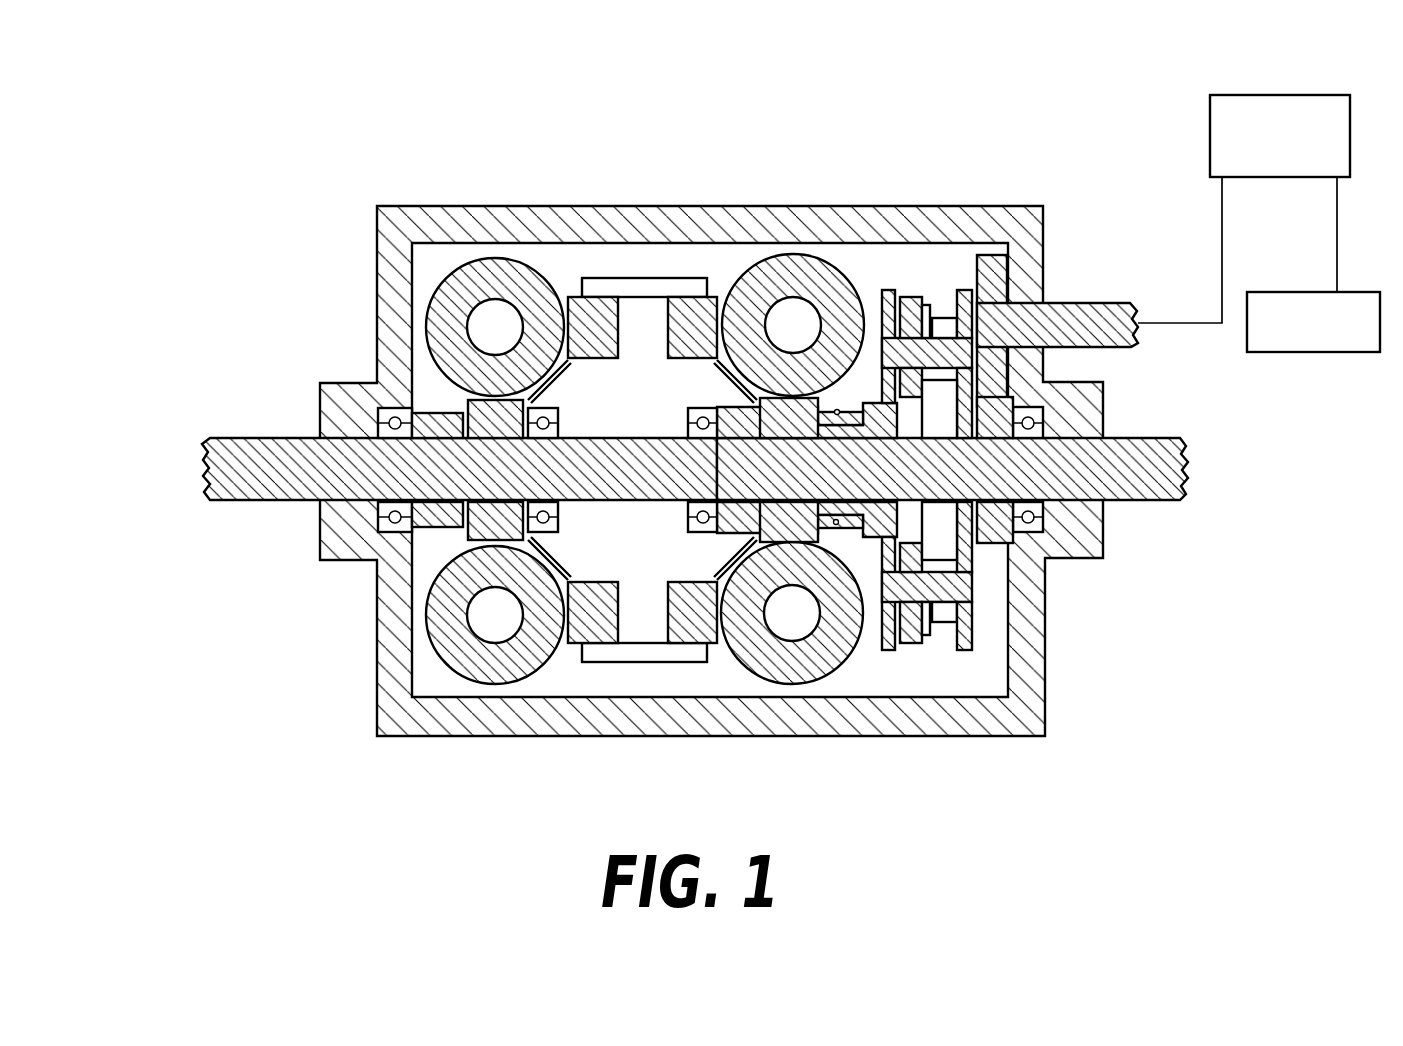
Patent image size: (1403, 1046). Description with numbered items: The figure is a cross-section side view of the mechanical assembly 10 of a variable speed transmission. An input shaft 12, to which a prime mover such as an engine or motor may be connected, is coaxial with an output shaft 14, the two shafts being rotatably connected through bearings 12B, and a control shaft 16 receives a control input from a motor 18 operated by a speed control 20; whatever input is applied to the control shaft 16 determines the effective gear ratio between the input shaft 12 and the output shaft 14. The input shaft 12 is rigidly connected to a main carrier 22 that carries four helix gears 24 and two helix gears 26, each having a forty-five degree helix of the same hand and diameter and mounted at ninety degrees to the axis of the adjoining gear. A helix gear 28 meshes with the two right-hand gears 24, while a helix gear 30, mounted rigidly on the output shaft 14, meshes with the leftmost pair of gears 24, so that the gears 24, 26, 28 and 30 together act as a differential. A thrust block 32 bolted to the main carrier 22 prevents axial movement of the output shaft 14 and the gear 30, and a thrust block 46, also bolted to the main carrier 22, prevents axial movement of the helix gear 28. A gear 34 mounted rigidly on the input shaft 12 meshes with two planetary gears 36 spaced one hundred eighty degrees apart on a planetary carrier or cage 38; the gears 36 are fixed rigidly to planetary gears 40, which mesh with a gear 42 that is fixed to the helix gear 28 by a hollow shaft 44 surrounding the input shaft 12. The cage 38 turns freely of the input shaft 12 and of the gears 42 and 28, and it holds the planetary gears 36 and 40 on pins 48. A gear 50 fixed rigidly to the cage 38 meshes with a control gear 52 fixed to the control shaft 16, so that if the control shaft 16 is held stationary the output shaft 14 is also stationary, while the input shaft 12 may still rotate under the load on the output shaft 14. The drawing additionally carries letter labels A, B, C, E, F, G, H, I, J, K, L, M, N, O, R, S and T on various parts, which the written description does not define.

The mechanical assembly 10 is at (572, 812).
The input shaft 12 is at (1190, 465).
The bearings 12B is at (706, 531).
The output shaft 14 is at (222, 460).
The control shaft 16 is at (1095, 310).
The motor 18 is at (1272, 178).
The speed control 20 is at (1327, 352).
The main carrier 22 is at (638, 285).
The helix gears 24 is at (621, 453).
The helix gears 26 is at (592, 298).
The helix gear 28 is at (800, 545).
The helix gear 30 is at (507, 540).
The thrust block 32 is at (432, 517).
The gear 34 is at (1034, 500).
The planetary gears 36 is at (935, 305).
The planetary carrier 38 is at (873, 290).
The planetary gears 40 is at (905, 296).
The gear 42 is at (910, 512).
The hollow shaft 44 is at (807, 469).
The thrust block 46 is at (750, 368).
The pins 48 is at (995, 300).
The gear 50 is at (1003, 456).
The control gear 52 is at (975, 300).
The output shaft portion A is at (948, 468).
The input shaft portion B is at (589, 468).
The cavity C is at (590, 476).
The support block E is at (643, 471).
The input disc F is at (497, 471).
The output disc G is at (785, 471).
The hub block H is at (938, 469).
The spacer I is at (930, 306).
The friction plate J is at (912, 670).
The hub K is at (868, 462).
The clutch plate L is at (966, 652).
The bearing block M is at (995, 470).
The housing wall N is at (1008, 253).
The control shaft end O is at (1119, 325).
The roller R is at (538, 262).
The spacer sleeve S is at (425, 425).
The thrust washer T is at (837, 412).